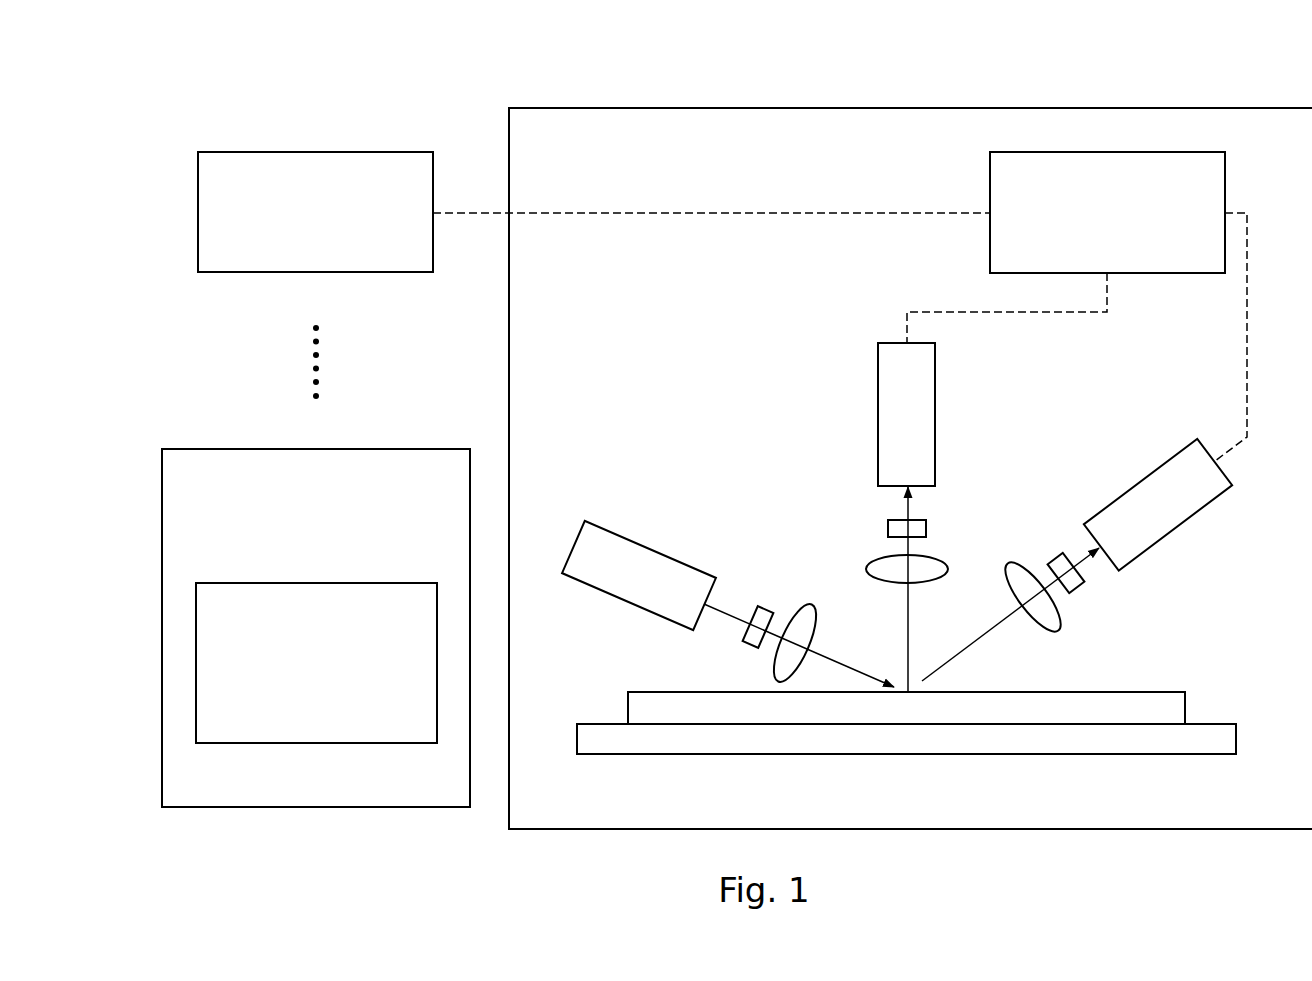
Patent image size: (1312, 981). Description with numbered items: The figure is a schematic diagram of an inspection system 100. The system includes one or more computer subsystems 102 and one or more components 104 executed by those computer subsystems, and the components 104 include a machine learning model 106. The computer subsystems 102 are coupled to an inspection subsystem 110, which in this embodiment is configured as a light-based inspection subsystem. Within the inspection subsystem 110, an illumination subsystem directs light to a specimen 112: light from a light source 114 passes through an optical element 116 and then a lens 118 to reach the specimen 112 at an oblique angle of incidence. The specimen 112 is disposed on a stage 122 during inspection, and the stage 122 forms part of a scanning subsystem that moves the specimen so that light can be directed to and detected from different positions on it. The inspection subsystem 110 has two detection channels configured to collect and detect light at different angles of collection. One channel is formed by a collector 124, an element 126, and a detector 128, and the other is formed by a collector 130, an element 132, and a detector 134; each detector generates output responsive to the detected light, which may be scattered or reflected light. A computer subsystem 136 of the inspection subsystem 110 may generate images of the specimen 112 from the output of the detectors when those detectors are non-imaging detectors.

The inspection system 100 is at (187, 116).
The computer subsystem 102 is at (317, 152).
The component 104 is at (443, 449).
The machine learning model 106 is at (383, 743).
The inspection subsystem 110 is at (1259, 108).
The specimen 112 is at (1185, 708).
The light source 114 is at (640, 548).
The optical element 116 is at (767, 607).
The lens 118 is at (809, 608).
The stage 122 is at (1236, 740).
The collector 124 is at (946, 567).
The element 126 is at (926, 529).
The detector 128 is at (935, 415).
The collector 130 is at (1056, 628).
The element 132 is at (1076, 590).
The detector 134 is at (1171, 522).
The computer subsystem 136 is at (1195, 152).